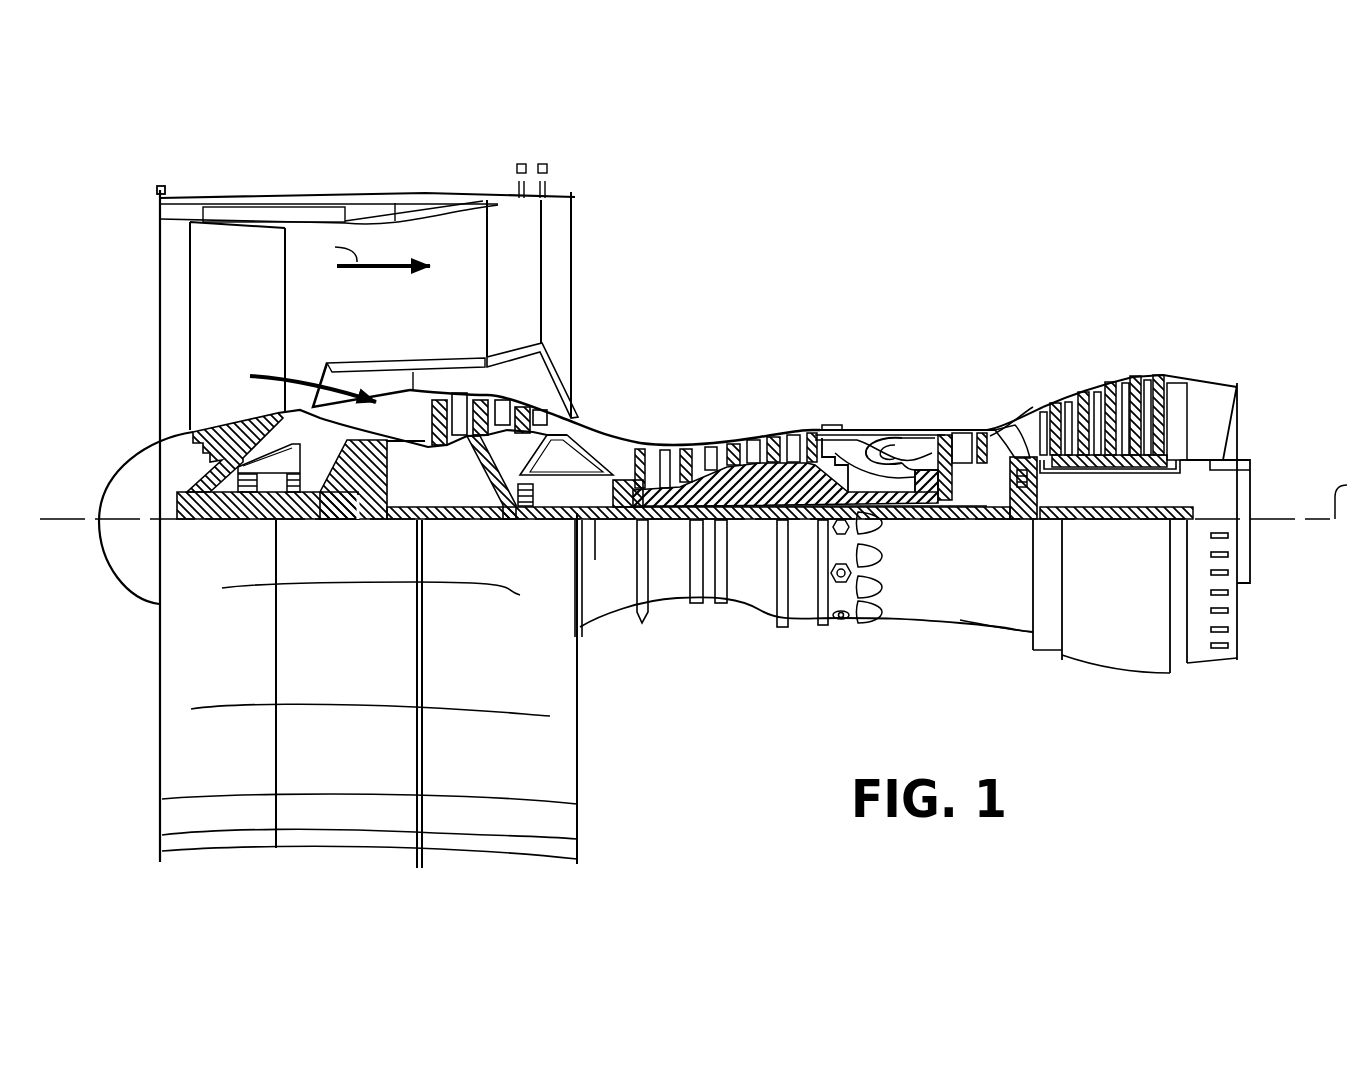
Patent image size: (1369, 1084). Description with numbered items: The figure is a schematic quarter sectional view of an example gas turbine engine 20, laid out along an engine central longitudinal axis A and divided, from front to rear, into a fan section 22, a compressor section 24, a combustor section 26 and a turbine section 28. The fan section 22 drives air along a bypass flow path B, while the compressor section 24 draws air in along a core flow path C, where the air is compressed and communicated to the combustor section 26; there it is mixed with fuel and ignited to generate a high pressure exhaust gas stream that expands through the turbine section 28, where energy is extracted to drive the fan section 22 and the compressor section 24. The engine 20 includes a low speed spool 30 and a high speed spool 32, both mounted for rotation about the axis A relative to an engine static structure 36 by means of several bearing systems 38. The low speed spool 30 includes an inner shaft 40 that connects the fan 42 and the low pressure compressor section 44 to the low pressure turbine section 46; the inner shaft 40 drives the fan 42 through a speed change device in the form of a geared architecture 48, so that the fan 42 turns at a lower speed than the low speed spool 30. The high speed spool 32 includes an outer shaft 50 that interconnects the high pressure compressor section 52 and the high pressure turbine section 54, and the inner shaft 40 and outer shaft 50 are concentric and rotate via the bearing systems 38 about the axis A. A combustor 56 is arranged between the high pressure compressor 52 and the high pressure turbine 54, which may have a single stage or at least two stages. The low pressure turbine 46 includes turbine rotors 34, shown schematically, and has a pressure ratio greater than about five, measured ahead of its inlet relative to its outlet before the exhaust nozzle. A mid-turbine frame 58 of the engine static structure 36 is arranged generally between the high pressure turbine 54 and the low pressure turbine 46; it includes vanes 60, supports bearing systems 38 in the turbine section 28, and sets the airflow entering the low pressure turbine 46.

The gas turbine engine 20 is at (1070, 202).
The fan section 22 is at (388, 163).
The compressor section 24 is at (420, 307).
The combustor section 26 is at (868, 307).
The turbine section 28 is at (943, 307).
The low speed spool 30 is at (748, 535).
The high speed spool 32 is at (783, 486).
The turbine rotors 34 is at (1118, 480).
The engine static structure 36 is at (805, 634).
The bearing systems 38 is at (245, 510).
The inner shaft 40 is at (595, 522).
The fan 42 is at (224, 303).
The low pressure compressor section 44 is at (505, 391).
The low pressure turbine section 46 is at (1107, 387).
The geared architecture 48 is at (363, 510).
The outer shaft 50 is at (886, 510).
The high pressure compressor section 52 is at (718, 440).
The high pressure turbine section 54 is at (960, 424).
The combustor 56 is at (876, 453).
The mid-turbine frame 58 is at (1009, 410).
The vanes 60 is at (1005, 447).